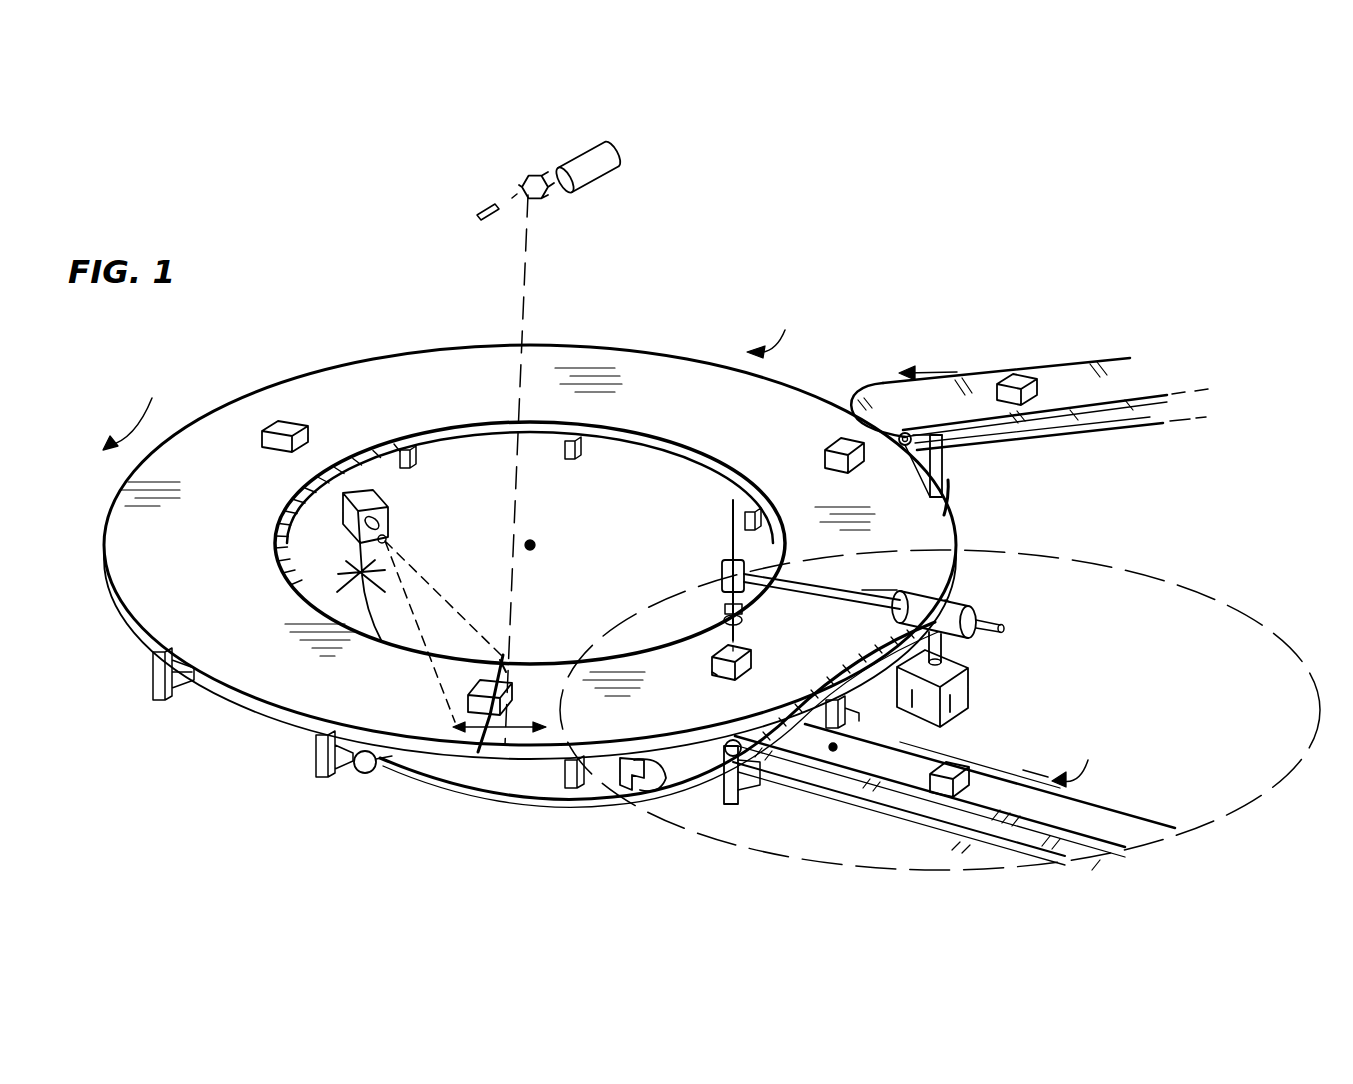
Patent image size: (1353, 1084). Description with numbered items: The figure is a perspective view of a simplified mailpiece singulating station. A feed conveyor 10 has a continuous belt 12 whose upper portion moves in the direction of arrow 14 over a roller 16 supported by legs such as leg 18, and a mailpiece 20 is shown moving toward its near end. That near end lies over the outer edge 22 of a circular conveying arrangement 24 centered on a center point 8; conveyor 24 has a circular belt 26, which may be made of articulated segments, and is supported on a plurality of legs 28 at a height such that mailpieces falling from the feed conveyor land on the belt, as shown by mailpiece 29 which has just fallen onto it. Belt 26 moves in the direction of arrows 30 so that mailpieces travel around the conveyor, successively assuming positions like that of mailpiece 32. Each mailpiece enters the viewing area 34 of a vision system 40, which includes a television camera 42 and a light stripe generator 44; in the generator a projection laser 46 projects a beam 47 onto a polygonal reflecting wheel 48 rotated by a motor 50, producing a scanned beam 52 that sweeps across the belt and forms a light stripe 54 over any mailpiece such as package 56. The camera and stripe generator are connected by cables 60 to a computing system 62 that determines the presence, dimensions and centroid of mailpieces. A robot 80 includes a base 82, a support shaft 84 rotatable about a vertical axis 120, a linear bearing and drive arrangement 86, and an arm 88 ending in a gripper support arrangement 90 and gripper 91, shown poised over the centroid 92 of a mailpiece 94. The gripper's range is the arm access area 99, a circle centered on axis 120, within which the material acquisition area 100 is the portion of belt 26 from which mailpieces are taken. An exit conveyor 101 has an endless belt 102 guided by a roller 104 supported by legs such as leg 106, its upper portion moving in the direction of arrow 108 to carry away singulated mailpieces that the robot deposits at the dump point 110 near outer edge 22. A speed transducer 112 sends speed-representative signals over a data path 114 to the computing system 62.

The center point 8 is at (536, 545).
The feed conveyor 10 is at (1067, 472).
The continuous belt 12 is at (1142, 405).
The arrow 14 is at (930, 370).
The roller 16 is at (893, 430).
The leg 18 is at (945, 468).
The mailpiece 20 is at (1018, 388).
The outer edge 22 is at (950, 497).
The circular conveying arrangement 24 is at (634, 504).
The circular belt 26 is at (640, 357).
The legs 28 is at (418, 463).
The mailpiece 29 is at (825, 452).
The arrows 30 is at (452, 371).
The mailpiece 32 is at (288, 420).
The viewing area 34 is at (500, 735).
The vision system 40 is at (483, 200).
The television camera 42 is at (392, 505).
The light stripe generator 44 is at (587, 158).
The projection laser 46 is at (475, 215).
The beam 47 is at (512, 200).
The polygonal reflecting wheel 48 is at (522, 178).
The motor 50 is at (578, 158).
The scanned beam 52 is at (530, 304).
The light stripe 54 is at (508, 672).
The package 56 is at (515, 697).
The cables 60 is at (345, 592).
The computing system 62 is at (648, 790).
The robot 80 is at (960, 690).
The base 82 is at (955, 715).
The support shaft 84 is at (968, 670).
The linear bearing and drive arrangement 86 is at (978, 608).
The arm 88 is at (870, 600).
The gripper support arrangement 90 is at (723, 575).
The gripper 91 is at (722, 614).
The centroid 92 is at (752, 664).
The mailpiece 94 is at (714, 676).
The arm access area 99 is at (1128, 549).
The material acquisition area 100 is at (857, 572).
The exit conveyor 101 is at (956, 867).
The endless belt 102 is at (925, 806).
The roller 104 is at (748, 766).
The leg 106 is at (712, 800).
The arrow 108 is at (1070, 751).
The dump point 110 is at (833, 751).
The speed transducer 112 is at (365, 774).
The data path 114 is at (463, 782).
The vertical axis 120 is at (955, 598).